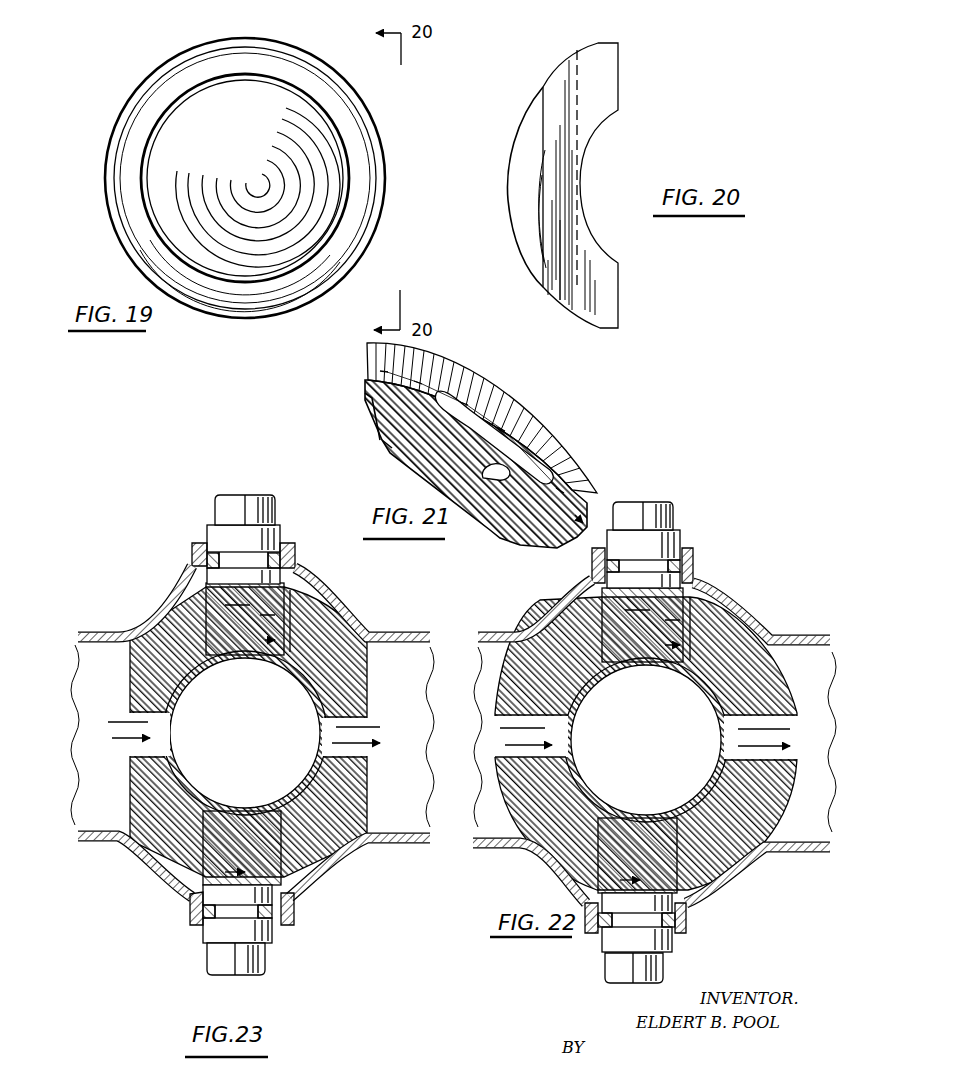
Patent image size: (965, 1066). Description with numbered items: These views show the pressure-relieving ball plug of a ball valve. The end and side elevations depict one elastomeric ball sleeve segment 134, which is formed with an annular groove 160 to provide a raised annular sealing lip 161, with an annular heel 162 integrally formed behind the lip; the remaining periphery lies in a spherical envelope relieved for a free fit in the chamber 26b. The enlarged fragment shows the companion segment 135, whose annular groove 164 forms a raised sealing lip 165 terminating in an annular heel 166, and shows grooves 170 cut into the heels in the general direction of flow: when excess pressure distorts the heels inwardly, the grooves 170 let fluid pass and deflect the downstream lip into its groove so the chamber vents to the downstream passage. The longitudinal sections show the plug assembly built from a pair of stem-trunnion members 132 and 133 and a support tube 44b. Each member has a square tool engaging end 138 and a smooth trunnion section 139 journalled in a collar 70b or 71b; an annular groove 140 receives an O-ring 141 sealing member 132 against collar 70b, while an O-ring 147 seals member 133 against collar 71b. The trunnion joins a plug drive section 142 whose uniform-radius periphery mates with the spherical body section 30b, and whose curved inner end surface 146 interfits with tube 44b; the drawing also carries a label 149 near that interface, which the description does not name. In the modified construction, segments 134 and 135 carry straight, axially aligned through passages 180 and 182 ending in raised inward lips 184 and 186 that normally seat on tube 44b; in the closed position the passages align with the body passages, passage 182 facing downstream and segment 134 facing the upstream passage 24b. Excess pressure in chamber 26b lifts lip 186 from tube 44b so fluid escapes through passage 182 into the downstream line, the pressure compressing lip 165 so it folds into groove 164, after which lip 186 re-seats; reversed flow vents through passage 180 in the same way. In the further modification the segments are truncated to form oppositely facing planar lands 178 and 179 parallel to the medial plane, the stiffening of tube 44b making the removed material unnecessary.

In FIG. 19, the annular groove 160 is at (308, 92).
In FIG. 20, the annular groove 160 is at (543, 90).
In FIG. 19, the annular sealing lip 161 is at (193, 78).
In FIG. 20, the annular sealing lip 161 is at (560, 64).
In FIG. 23, the annular sealing lip 161 is at (150, 616).
In FIG. 22, the annular sealing lip 161 is at (534, 612).
In FIG. 20, the annular heel 162 is at (577, 55).
In FIG. 20, the elastomeric ball sleeve segment 134 is at (627, 88).
In FIG. 23, the elastomeric ball sleeve segment 134 is at (122, 675).
In FIG. 22, the elastomeric ball sleeve segment 134 is at (505, 665).
In FIG. 21, the elastomeric ball sleeve segment 135 is at (392, 453).
In FIG. 23, the elastomeric ball sleeve segment 135 is at (384, 700).
In FIG. 22, the elastomeric ball sleeve segment 135 is at (770, 678).
In FIG. 21, the annular groove 164 is at (483, 477).
In FIG. 21, the annular sealing lip 165 is at (570, 453).
In FIG. 23, the annular sealing lip 165 is at (358, 627).
In FIG. 22, the annular sealing lip 165 is at (749, 640).
In FIG. 21, the annular heel 166 is at (543, 428).
In FIG. 21, the grooves 170 is at (452, 410).
In FIG. 21, the chamber 26b is at (370, 364).
In FIG. 21, the body section 30b is at (505, 393).
In FIG. 23, the body section 30b is at (327, 868).
In FIG. 22, the body section 30b is at (729, 882).
In FIG. 23, the stem-trunnion member 132 is at (275, 497).
In FIG. 22, the stem-trunnion member 132 is at (662, 497).
In FIG. 23, the stem-trunnion member 133 is at (270, 968).
In FIG. 22, the stem-trunnion member 133 is at (600, 975).
In FIG. 23, the tool engaging end 138 is at (276, 518).
In FIG. 22, the tool engaging end 138 is at (676, 514).
In FIG. 23, the trunnion section 139 is at (211, 530).
In FIG. 22, the trunnion section 139 is at (681, 537).
In FIG. 23, the annular groove 140 is at (208, 562).
In FIG. 22, the annular groove 140 is at (684, 557).
In FIG. 23, the O-ring 141 is at (197, 548).
In FIG. 22, the O-ring 141 is at (695, 571).
In FIG. 23, the plug drive section 142 is at (298, 572).
In FIG. 22, the plug drive section 142 is at (706, 592).
In FIG. 23, the inner end surface 146 is at (268, 658).
In FIG. 22, the inner end surface 146 is at (660, 665).
In FIG. 23, the O-ring 147 is at (192, 916).
In FIG. 22, the O-ring 147 is at (689, 923).
In FIG. 23, the liner gap 149 is at (246, 660).
In FIG. 22, the liner gap 149 is at (640, 663).
In FIG. 23, the planar land 178 is at (129, 668).
In FIG. 23, the planar land 179 is at (368, 672).
In FIG. 23, the through passage 180 is at (130, 713).
In FIG. 22, the through passage 180 is at (494, 726).
In FIG. 23, the through passage 182 is at (410, 731).
In FIG. 22, the through passage 182 is at (790, 720).
In FIG. 23, the annular lip 184 is at (166, 710).
In FIG. 22, the annular lip 184 is at (564, 717).
In FIG. 23, the annular lip 186 is at (322, 718).
In FIG. 22, the annular lip 186 is at (720, 720).
In FIG. 23, the support tube 44b is at (172, 770).
In FIG. 22, the support tube 44b is at (582, 790).
In FIG. 23, the upstream passage 24b is at (80, 830).
In FIG. 22, the upstream passage 24b is at (483, 836).
In FIG. 23, the collar 70b is at (292, 558).
In FIG. 22, the collar 70b is at (592, 570).
In FIG. 23, the collar 71b is at (285, 911).
In FIG. 22, the collar 71b is at (687, 935).